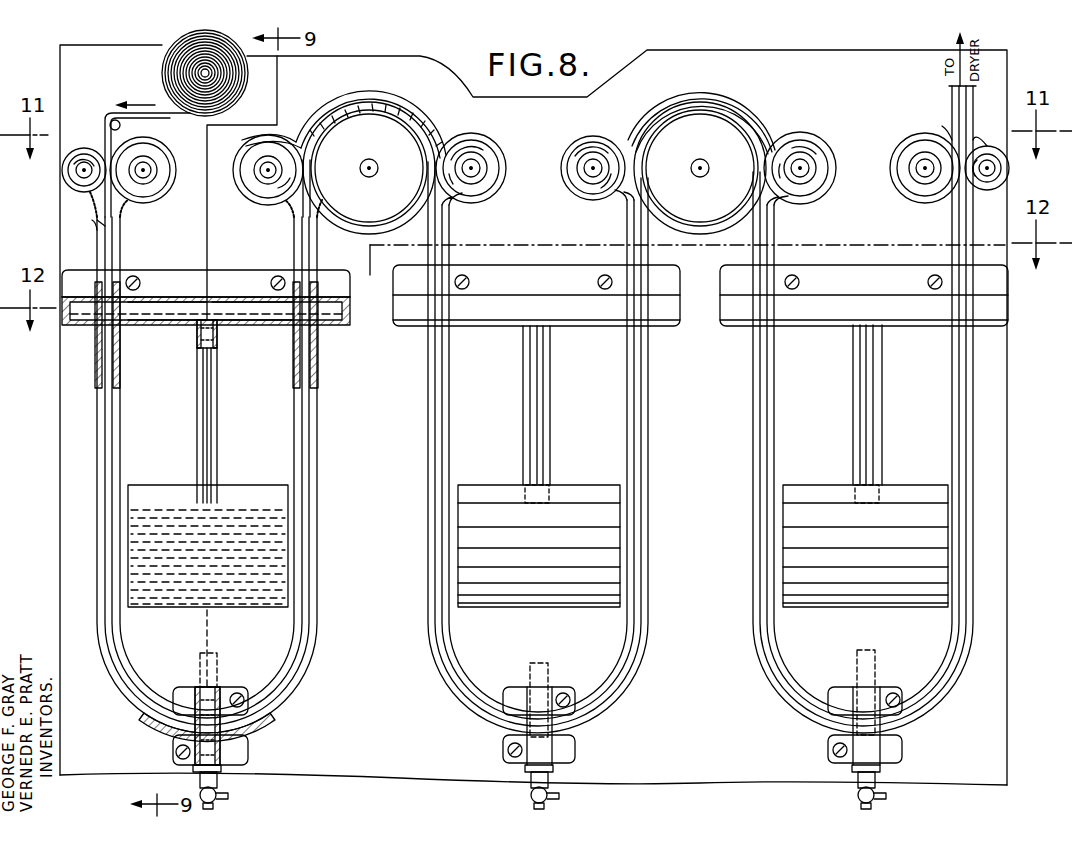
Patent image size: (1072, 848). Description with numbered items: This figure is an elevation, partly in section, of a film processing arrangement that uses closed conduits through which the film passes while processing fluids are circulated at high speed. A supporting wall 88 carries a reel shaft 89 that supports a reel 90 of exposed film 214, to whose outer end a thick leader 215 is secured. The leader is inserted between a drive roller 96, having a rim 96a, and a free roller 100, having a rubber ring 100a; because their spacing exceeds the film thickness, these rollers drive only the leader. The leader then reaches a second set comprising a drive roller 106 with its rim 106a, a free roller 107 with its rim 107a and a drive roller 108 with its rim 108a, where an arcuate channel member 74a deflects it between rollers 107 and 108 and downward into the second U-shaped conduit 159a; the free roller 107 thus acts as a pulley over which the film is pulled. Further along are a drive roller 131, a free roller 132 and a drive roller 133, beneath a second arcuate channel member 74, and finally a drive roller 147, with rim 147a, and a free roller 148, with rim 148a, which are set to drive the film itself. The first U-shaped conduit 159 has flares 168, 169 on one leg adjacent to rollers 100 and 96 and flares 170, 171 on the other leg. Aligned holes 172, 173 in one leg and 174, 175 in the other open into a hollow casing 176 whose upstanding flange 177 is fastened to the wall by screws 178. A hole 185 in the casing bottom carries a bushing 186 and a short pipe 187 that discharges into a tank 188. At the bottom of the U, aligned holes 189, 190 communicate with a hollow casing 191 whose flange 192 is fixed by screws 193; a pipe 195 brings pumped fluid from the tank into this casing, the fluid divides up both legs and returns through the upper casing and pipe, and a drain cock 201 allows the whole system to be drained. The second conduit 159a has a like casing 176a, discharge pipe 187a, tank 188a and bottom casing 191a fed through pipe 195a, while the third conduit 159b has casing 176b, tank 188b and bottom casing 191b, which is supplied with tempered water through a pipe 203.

The supporting wall 88 is at (70, 70).
The reel shaft 89 is at (201, 73).
The reel 90 is at (245, 86).
The exposed film 214 is at (150, 118).
The drive roller 96 is at (158, 153).
The rim 96a is at (170, 185).
The free roller 100 is at (68, 176).
The rubber ring 100a is at (64, 162).
The drive roller 106 is at (253, 188).
The roller rim 106a is at (248, 143).
The free roller 107 is at (362, 215).
The drum roller rim 107a is at (388, 228).
The arcuate channel member 74a is at (390, 90).
The drive roller 108 is at (487, 148).
The roller rim 108a is at (502, 186).
The drive roller 131 is at (586, 190).
The free roller 132 is at (704, 218).
The belt 74 is at (702, 91).
The drive roller 133 is at (796, 143).
The drive roller 147 is at (910, 150).
The roller rim 147a is at (900, 180).
The free roller 148 is at (1002, 168).
The guide roller rim 148a is at (986, 146).
The U-shaped conduit 159 is at (97, 405).
The second U-shaped conduit 159a is at (428, 405).
The third U-shaped conduit 159b is at (754, 392).
The flare 168 is at (92, 202).
The flare 169 is at (122, 204).
The flare 170 is at (288, 208).
The flare 171 is at (330, 212).
The leader 215 is at (95, 222).
The hollow casing 176 is at (215, 295).
The hollow casing 176a is at (478, 323).
The hollow casing 176b is at (802, 320).
The upstanding flange 177 is at (170, 278).
The screws 178 is at (134, 276).
The hole 172 is at (96, 310).
The hole 173 is at (140, 302).
The hole 174 is at (286, 312).
The hole 175 is at (320, 304).
The hole 185 is at (208, 312).
The bushing 186 is at (197, 332).
The short pipe 187 is at (218, 383).
The discharge pipe 187a is at (548, 372).
The tank 188 is at (256, 485).
The tank 188a is at (565, 485).
The tank 188b is at (897, 485).
The fitting or pipe 195 is at (220, 660).
The drain rod 195a is at (552, 672).
The pipe 203 is at (872, 668).
The flange 192 is at (186, 695).
The hollow casing 191 is at (230, 752).
The hollow casing 191a is at (548, 696).
The hollow casing 191b is at (884, 696).
The hole 189 is at (216, 692).
The screws 193 is at (243, 696).
The hole 190 is at (193, 769).
The drain cock 201 is at (222, 792).